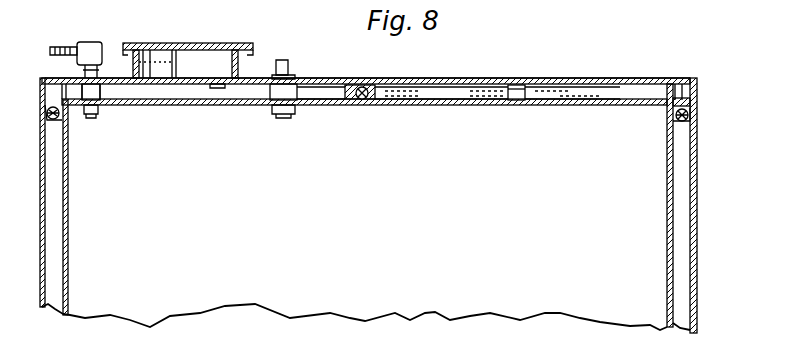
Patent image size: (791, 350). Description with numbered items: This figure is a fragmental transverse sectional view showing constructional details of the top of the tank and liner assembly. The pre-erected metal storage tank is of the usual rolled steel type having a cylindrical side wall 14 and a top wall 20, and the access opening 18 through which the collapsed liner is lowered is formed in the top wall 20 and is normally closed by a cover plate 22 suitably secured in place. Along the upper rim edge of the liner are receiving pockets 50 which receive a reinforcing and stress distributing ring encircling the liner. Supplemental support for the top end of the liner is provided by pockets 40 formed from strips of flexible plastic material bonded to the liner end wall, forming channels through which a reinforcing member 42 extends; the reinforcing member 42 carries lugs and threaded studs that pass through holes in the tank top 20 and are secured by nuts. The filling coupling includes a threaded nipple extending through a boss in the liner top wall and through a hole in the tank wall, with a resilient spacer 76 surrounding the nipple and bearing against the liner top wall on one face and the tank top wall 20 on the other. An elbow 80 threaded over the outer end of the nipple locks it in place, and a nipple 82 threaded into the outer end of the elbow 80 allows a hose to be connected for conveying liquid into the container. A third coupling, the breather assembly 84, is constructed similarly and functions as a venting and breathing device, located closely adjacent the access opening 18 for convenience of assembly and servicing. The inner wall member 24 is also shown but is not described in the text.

The cylindrical side wall 14 is at (697, 268).
The access opening 18 is at (143, 45).
The top wall 20 is at (240, 68).
The cover plate 22 is at (195, 44).
The inner wall 24 is at (667, 226).
The pockets 40 is at (432, 92).
The reinforcing member 42 is at (522, 88).
The receiving pockets 50 is at (672, 128).
The resilient spacer 76 is at (102, 97).
The elbow 80 is at (91, 46).
The nipple 82 is at (58, 47).
The breather assembly 84 is at (290, 60).